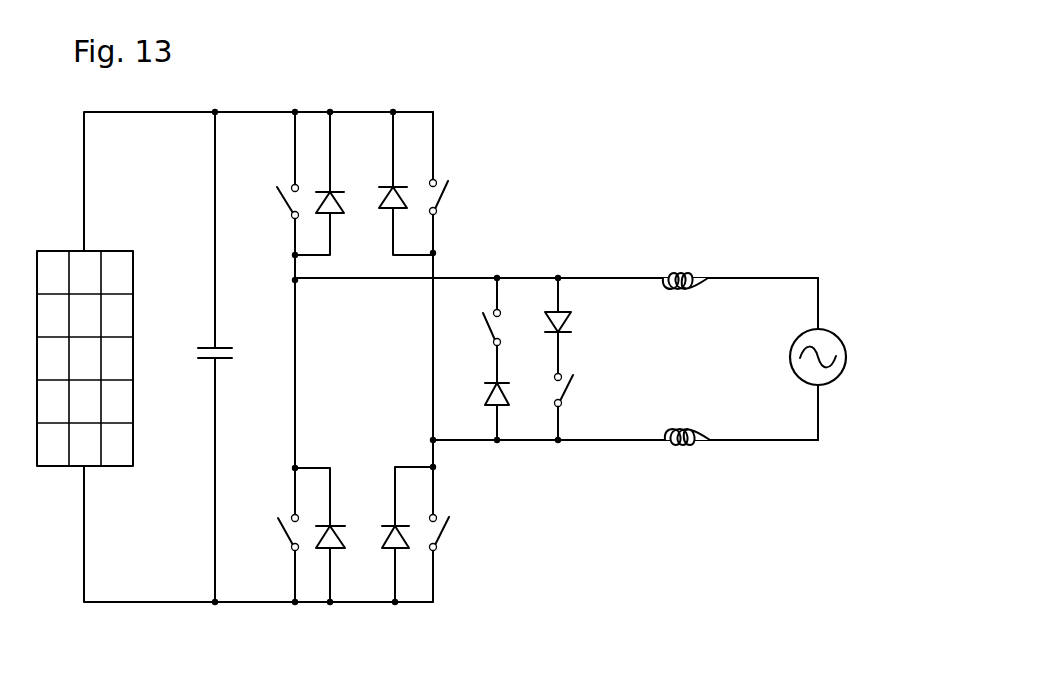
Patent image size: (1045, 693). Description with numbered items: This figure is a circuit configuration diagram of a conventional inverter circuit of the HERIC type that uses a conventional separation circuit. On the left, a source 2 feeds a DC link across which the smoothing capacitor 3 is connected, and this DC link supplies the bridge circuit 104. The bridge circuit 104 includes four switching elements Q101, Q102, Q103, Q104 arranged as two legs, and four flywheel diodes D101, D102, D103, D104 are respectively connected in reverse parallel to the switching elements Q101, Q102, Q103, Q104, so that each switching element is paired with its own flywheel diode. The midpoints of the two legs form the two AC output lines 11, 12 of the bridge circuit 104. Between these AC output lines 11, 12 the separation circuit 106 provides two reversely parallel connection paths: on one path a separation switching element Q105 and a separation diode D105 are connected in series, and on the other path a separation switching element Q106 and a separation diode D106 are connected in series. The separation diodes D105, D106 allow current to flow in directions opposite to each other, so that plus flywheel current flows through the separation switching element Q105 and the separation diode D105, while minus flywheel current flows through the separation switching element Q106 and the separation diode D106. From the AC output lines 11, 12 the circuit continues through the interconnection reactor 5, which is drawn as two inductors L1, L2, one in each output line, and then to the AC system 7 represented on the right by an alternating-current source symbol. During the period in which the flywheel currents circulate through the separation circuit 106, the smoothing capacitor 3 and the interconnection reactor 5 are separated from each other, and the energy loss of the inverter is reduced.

The solar cell panel 2 is at (57, 250).
The smoothing capacitor 3 is at (207, 345).
The interconnection reactor 5 is at (706, 321).
The AC power system / grid 7 is at (832, 328).
The AC output line 11 is at (465, 278).
The AC output line 12 is at (477, 440).
The bridge circuit 104 is at (368, 335).
The separation circuit 106 is at (529, 319).
The switching element Q101 is at (267, 288).
The switching element Q102 is at (264, 535).
The switching element Q103 is at (463, 289).
The switching element Q104 is at (463, 534).
The separation switching element Q105 is at (469, 329).
The separation switching element Q106 is at (589, 391).
The flywheel diode D101 is at (345, 205).
The flywheel diode D102 is at (346, 538).
The flywheel diode D103 is at (380, 195).
The flywheel diode D104 is at (383, 533).
The separation diode D105 is at (473, 413).
The separation diode D106 is at (583, 324).
The inductor L1 is at (685, 262).
The inductor L2 is at (687, 417).